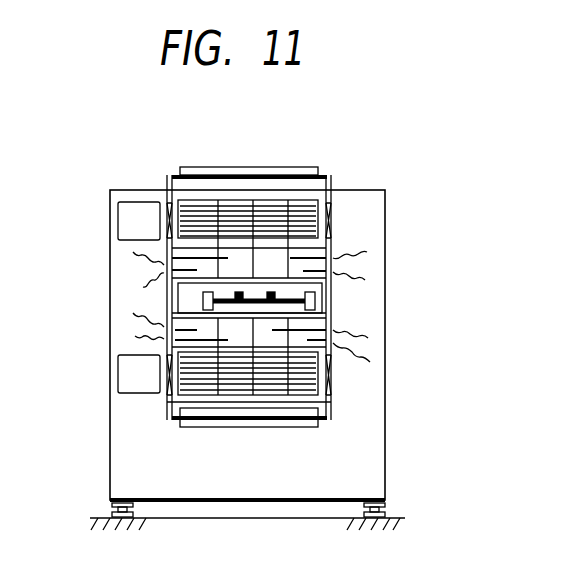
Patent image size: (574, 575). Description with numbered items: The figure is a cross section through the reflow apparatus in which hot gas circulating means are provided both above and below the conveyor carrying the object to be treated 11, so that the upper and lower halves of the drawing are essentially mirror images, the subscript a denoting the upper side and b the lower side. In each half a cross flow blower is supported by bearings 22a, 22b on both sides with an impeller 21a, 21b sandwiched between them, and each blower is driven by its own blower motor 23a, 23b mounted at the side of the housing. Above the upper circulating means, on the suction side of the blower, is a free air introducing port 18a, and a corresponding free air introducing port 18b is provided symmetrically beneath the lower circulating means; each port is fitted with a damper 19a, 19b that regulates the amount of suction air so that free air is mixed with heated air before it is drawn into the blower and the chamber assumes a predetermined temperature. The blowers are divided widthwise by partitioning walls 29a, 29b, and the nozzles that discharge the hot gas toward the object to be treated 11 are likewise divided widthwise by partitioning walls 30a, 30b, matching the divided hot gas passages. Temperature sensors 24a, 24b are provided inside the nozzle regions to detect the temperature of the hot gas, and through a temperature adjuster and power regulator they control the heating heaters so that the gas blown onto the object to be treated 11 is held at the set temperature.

The object to be treated 11 is at (327, 330).
The free air introducing port (upper side) 18a is at (187, 167).
The free air introducing port (lower side) 18b is at (192, 428).
The damper (upper side) 19a is at (228, 200).
The damper (lower side) 19b is at (211, 428).
The impeller (upper side) 21a is at (270, 200).
The impeller (lower side) 21b is at (242, 385).
The bearing (upper side) 22a is at (168, 205).
The bearing (lower side) 22b is at (167, 398).
The blower motor (upper side) 23a is at (128, 217).
The blower motor (lower side) 23b is at (130, 378).
The temperature sensor (upper side) 24a is at (167, 273).
The temperature sensor (lower side) 24b is at (167, 337).
The partitioning wall (upper side) 29a is at (293, 218).
The partitioning wall (lower side) 29b is at (286, 390).
The partitioning wall (upper side) 30a is at (326, 246).
The partitioning wall (lower side) 30b is at (333, 401).